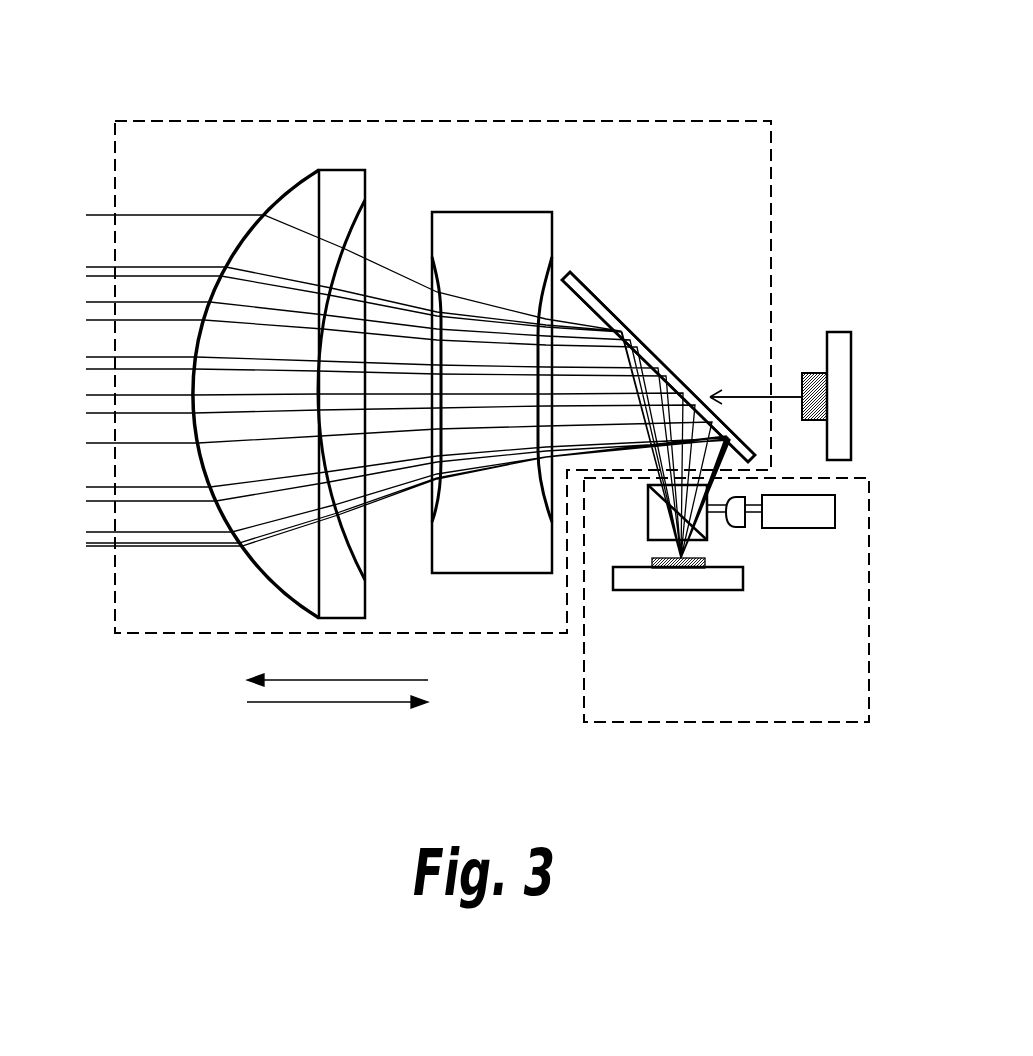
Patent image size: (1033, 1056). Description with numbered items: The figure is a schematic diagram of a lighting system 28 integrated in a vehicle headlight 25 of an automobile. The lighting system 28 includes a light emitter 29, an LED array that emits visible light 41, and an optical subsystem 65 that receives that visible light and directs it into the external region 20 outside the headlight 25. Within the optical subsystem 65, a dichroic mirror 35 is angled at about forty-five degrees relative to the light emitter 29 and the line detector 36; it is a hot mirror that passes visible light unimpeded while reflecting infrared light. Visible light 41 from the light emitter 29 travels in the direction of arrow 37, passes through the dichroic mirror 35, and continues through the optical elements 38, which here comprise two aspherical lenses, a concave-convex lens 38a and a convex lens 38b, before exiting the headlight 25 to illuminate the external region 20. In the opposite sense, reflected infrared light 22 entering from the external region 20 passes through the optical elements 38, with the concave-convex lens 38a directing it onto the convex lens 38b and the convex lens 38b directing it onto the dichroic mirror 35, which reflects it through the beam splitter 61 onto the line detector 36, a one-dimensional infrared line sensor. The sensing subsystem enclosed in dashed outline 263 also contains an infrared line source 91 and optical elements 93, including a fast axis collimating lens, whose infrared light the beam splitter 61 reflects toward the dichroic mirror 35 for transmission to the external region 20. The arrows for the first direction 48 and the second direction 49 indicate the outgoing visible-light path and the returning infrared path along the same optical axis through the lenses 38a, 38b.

The external region 20 is at (74, 397).
The reflected infrared light 22 is at (561, 304).
The vehicle headlight 25 is at (657, 107).
The lighting system 28 is at (660, 102).
The light emitter 29 is at (850, 350).
The dichroic mirror 35 is at (613, 312).
The line detector 36 is at (702, 590).
The arrow 37 is at (748, 397).
The optical elements 38 is at (407, 192).
The concave-convex lens 38a is at (298, 198).
The convex lens 38b is at (513, 208).
The visible light 41 is at (697, 322).
The first direction 48 is at (372, 680).
The second direction 49 is at (318, 702).
The beam splitter 61 is at (648, 520).
The optical subsystem 65 is at (230, 120).
The line source 91 is at (797, 528).
The optical elements 93 is at (737, 527).
The illumination module 263 is at (870, 642).